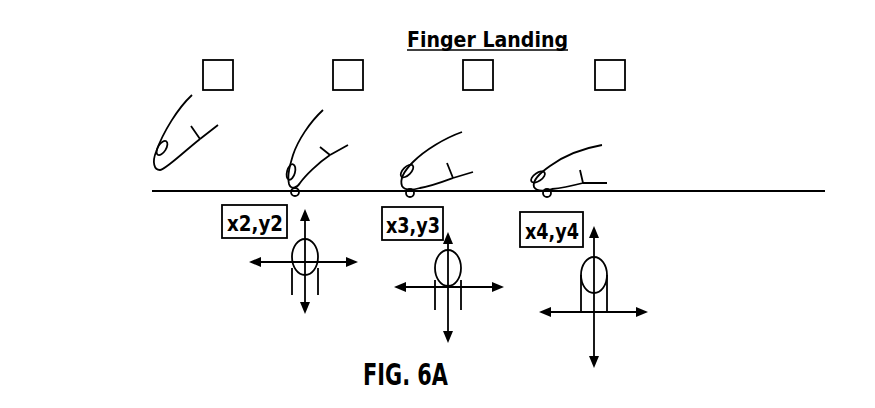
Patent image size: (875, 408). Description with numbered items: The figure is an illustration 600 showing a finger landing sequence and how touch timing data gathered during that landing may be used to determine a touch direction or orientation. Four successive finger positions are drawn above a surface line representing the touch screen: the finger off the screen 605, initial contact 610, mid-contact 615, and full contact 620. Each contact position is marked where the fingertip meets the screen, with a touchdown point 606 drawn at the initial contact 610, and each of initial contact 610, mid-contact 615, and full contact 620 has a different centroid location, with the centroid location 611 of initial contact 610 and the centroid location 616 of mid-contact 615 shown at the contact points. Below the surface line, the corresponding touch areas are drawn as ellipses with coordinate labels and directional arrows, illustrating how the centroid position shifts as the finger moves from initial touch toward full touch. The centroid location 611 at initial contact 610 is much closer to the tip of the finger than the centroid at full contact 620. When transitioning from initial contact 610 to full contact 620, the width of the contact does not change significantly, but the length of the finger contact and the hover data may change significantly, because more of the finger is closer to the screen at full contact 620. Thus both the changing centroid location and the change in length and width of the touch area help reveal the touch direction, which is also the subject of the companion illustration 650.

The illustration 600 is at (648, 54).
The off the screen 605 is at (218, 90).
The first touchdown point 606 is at (289, 184).
The initial contact 610 is at (348, 90).
The centroid location 611 is at (406, 182).
The mid-contact 615 is at (478, 90).
The centroid location 616 is at (539, 180).
The full contact 620 is at (610, 90).
The illustration 650 is at (500, 403).